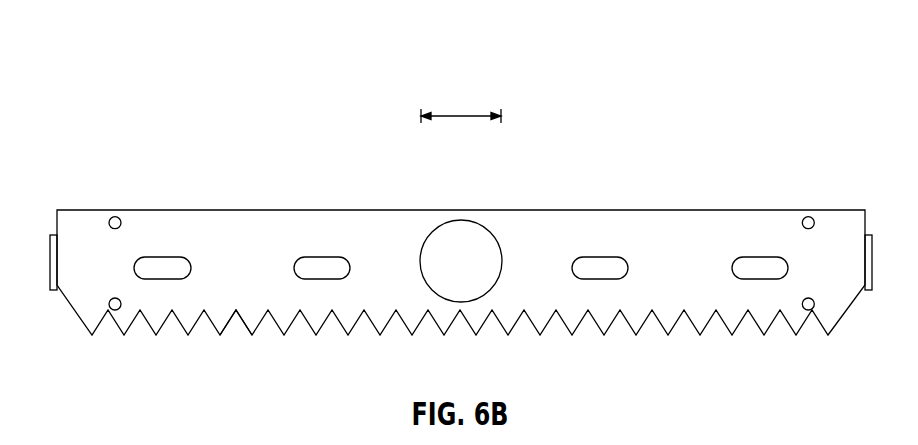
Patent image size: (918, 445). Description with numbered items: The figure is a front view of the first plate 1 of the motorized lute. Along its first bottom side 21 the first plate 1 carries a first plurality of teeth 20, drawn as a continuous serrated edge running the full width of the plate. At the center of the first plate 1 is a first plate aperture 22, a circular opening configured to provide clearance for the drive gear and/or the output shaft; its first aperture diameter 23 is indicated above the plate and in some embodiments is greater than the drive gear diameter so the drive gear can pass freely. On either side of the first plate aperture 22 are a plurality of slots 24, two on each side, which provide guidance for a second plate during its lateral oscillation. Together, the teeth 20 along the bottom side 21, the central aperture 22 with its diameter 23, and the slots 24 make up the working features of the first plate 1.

The first plate 1 is at (694, 52).
The first plurality of teeth 20 is at (645, 323).
The first bottom side 21 is at (243, 323).
The first plate aperture 22 is at (468, 263).
The first aperture diameter 23 is at (460, 113).
The plurality of slots 24 is at (162, 265).